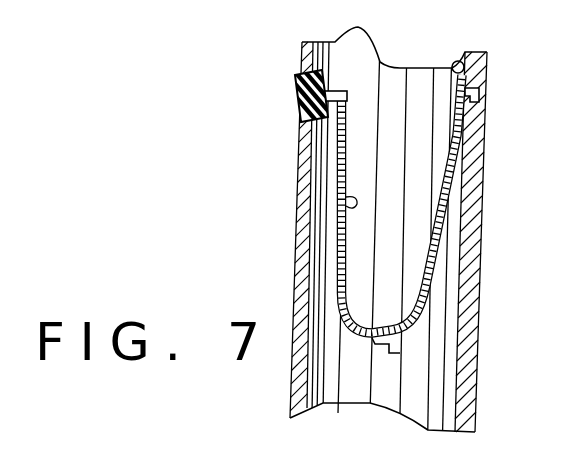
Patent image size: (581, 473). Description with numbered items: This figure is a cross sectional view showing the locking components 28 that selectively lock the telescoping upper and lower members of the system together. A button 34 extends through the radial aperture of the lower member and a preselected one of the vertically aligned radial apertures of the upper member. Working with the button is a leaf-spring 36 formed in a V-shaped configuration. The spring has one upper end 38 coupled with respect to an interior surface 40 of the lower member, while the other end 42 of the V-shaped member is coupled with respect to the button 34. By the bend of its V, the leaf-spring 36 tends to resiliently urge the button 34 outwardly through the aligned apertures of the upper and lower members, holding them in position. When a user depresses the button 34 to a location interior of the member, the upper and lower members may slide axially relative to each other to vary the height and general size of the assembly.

The locking components 28 is at (347, 198).
The button 34 is at (295, 90).
The leaf-spring 36 is at (400, 353).
The upper end 38 is at (470, 124).
The interior surface 40 is at (462, 58).
The other end 42 is at (394, 41).